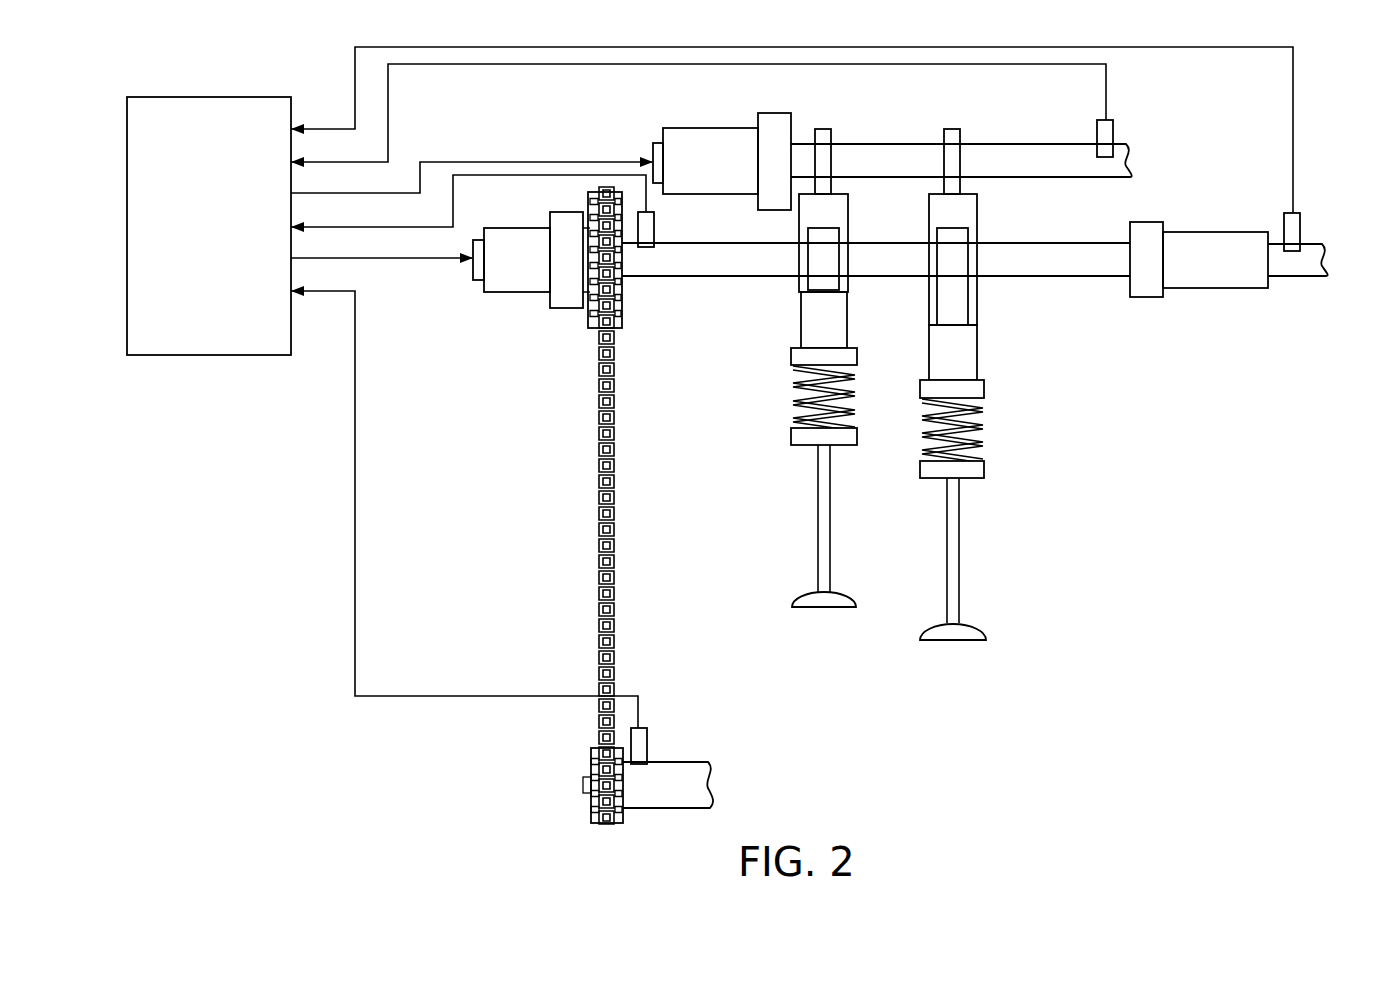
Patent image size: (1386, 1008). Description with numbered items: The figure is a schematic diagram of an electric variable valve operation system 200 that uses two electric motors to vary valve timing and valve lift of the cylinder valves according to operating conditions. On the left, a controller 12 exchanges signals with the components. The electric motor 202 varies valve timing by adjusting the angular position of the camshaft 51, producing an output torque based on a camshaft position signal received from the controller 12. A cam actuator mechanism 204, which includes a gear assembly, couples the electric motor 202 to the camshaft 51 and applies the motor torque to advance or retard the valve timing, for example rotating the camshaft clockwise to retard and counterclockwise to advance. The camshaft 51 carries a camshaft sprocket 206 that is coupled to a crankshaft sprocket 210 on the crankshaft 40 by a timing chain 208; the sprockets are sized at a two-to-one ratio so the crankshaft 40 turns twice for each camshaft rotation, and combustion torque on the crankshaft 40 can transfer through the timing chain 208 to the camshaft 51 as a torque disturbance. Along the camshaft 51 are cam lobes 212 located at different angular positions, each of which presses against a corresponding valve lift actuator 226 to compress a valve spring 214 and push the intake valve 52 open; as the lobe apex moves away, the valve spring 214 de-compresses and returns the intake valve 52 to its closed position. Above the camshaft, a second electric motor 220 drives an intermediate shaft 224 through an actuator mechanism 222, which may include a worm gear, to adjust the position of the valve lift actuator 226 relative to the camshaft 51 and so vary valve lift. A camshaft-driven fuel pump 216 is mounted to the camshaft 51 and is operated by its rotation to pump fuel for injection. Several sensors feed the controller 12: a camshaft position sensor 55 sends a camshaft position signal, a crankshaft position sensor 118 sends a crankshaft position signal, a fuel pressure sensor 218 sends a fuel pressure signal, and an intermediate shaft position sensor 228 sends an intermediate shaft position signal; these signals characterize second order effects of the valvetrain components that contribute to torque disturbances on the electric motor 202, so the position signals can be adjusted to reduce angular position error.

The controller 12 is at (207, 97).
The crankshaft 40 is at (716, 788).
The camshaft 51 is at (1033, 242).
The intake valve 52 is at (810, 593).
The camshaft position sensor 55 is at (655, 230).
The crankshaft position sensor 118 is at (647, 728).
The electric variable valve operation system 200 is at (1218, 619).
The electric motor 202 is at (492, 292).
The cam actuator mechanism 204 is at (555, 212).
The camshaft sprocket 206 is at (622, 300).
The timing chain 208 is at (598, 582).
The crankshaft sprocket 210 is at (591, 755).
The cam lobes 212 is at (845, 283).
The valve spring 214 is at (792, 435).
The camshaft-driven fuel pump 216 is at (1193, 232).
The fuel pressure sensor 218 is at (1300, 222).
The electric motor 220 is at (705, 128).
The actuator mechanism 222 is at (775, 113).
The intermediate shaft 224 is at (1005, 143).
The valve lift actuator 226 is at (848, 340).
The intermediate shaft position sensor 228 is at (1113, 128).